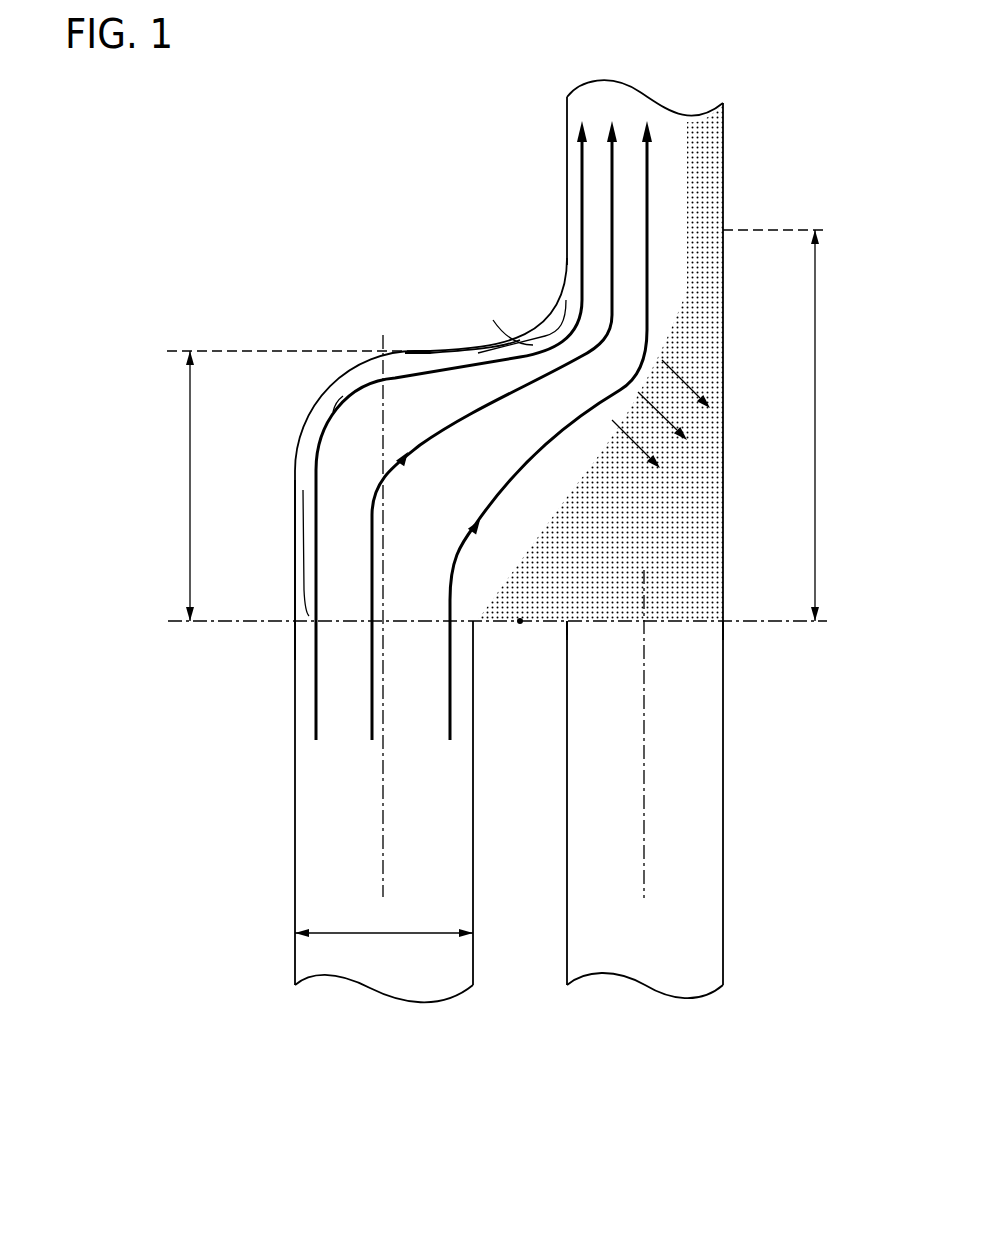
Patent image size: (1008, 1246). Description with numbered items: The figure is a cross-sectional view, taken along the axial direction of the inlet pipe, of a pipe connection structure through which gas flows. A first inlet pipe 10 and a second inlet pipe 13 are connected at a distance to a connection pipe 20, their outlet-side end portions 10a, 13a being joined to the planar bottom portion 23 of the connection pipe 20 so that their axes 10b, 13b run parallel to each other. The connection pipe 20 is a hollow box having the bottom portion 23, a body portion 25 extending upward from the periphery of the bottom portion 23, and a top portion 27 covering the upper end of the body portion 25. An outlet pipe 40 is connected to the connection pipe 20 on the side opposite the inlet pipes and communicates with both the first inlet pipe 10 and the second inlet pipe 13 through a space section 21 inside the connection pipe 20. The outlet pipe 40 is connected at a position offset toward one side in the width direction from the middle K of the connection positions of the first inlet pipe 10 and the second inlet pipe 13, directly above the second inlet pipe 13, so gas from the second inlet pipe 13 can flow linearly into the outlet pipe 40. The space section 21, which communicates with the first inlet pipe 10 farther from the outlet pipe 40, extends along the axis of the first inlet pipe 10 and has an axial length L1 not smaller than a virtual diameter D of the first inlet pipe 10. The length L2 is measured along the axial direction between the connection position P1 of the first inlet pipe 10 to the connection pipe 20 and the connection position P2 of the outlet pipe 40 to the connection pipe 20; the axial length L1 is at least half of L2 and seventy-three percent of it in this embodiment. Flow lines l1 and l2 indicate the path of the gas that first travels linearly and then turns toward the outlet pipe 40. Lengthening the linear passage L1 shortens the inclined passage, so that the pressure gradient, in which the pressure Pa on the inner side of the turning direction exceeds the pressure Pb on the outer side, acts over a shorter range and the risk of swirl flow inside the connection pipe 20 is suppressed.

The first inlet pipe 10 is at (295, 910).
The outlet-side end portion of the first inlet pipe 10a is at (305, 632).
The axis of the first inlet pipe 10b is at (383, 790).
The second inlet pipe 13 is at (723, 907).
The outlet-side end portion of the second inlet pipe 13a is at (700, 635).
The axis of the second inlet pipe 13b is at (644, 800).
The connection pipe 20 is at (306, 370).
The space section 21 is at (457, 393).
The bottom portion 23 is at (553, 622).
The body portion 25 is at (297, 557).
The top portion 27 is at (418, 347).
The outlet pipe 40 is at (725, 163).
The middle of the connection positions K is at (520, 624).
The pressure on the inner side of the gas turning direction Pa is at (497, 343).
The pressure on the outer side of the turning direction Pb is at (697, 420).
The connection position of the first inlet pipe to the connection pipe P1 is at (270, 626).
The connection position of the outlet pipe to the connection pipe P2 is at (738, 211).
The axial length of the space section L1 is at (243, 486).
The length of the first inlet pipe along the axial direction between P1 and P2 L2 is at (834, 425).
The line l1 is at (303, 490).
The line l2 is at (530, 338).
The virtual diameter of the first inlet pipe D is at (384, 921).